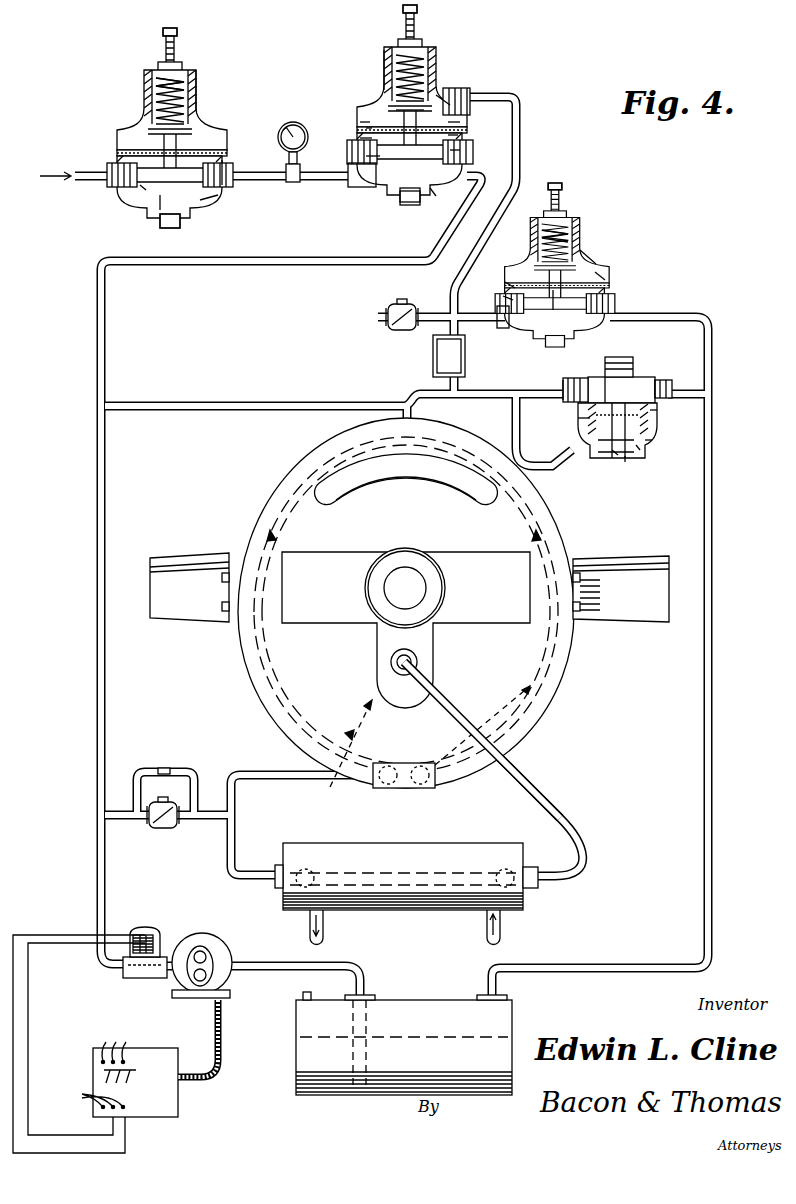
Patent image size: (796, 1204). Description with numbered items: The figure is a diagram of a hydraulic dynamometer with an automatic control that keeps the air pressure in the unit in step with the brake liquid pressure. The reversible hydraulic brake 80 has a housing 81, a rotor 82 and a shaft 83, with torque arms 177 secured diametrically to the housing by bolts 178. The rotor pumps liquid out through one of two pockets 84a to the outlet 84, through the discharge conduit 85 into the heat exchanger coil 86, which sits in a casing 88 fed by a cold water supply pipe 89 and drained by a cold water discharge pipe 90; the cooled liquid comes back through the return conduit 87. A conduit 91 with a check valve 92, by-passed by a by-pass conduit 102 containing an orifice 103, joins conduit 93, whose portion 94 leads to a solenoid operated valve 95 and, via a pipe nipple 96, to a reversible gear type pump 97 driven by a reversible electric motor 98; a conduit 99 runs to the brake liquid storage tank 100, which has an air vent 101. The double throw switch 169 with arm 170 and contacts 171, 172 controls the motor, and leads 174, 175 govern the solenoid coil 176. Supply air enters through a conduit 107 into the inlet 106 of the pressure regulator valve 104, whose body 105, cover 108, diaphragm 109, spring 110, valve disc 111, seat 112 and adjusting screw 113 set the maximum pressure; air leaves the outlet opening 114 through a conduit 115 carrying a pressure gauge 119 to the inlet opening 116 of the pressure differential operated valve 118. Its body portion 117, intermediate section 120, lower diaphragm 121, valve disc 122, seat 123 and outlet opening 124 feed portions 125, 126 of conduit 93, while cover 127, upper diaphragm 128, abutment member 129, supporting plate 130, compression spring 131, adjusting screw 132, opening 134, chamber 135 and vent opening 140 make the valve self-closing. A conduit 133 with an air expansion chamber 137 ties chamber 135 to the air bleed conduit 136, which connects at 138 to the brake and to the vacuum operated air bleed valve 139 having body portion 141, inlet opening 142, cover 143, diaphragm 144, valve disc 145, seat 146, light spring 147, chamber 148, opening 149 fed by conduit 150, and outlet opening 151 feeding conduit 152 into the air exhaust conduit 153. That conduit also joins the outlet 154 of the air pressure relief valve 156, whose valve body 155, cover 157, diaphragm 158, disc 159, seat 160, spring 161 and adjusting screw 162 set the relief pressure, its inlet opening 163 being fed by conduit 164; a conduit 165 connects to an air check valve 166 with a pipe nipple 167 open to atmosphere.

The reversible hydraulic brake 80 is at (419, 618).
The housing 81 is at (250, 698).
The rotor 82 is at (548, 664).
The shaft 83 is at (410, 566).
The outlet 84 is at (392, 790).
The pockets 84a is at (458, 770).
The discharge conduit 85 is at (258, 766).
The heat exchanger coil 86 is at (314, 870).
The return conduit 87 is at (570, 826).
The casing 88 is at (530, 900).
The cold water supply pipe 89 is at (500, 930).
The cold water discharge pipe 90 is at (325, 922).
The conduit 91 is at (188, 822).
The check valve 92 is at (163, 828).
The conduit 93 is at (105, 660).
The portion 94 is at (105, 888).
The solenoid operated valve 95 is at (160, 921).
The pipe nipple 96 is at (166, 978).
The reversible gear type pump 97 is at (208, 956).
The reversible electric motor 98 is at (214, 947).
The conduit 99 is at (340, 960).
The brake liquid storage tank 100 is at (426, 1016).
The air vent 101 is at (302, 996).
The by-pass conduit 102 is at (192, 770).
The orifice 103 is at (162, 768).
The pressure regulator valve 104 is at (213, 72).
The valve body 105 is at (204, 205).
The inlet 106 is at (140, 195).
The conduit 107 is at (85, 170).
The cover 108 is at (198, 94).
The diaphragm 109 is at (226, 150).
The spring 110 is at (160, 100).
The valve disc 111 is at (180, 222).
The seat 112 is at (152, 208).
The adjusting screw 113 is at (160, 38).
The outlet opening 114 is at (262, 182).
The conduit 115 is at (316, 182).
The inlet opening 116 is at (364, 190).
The body portion 117 is at (410, 204).
The pressure differential operated valve 118 is at (440, 61).
The pressure gauge 119 is at (296, 120).
The intermediate section 120 is at (362, 140).
The diaphragm 121 is at (454, 152).
The valve disc 122 is at (490, 170).
The seat 123 is at (368, 158).
The outlet opening 124 is at (432, 196).
The portion 125 is at (273, 263).
The portion 126 is at (105, 510).
The cover 127 is at (440, 88).
The diaphragm 128 is at (360, 120).
The abutment member 129 is at (366, 130).
The supporting plate 130 is at (450, 138).
The compression spring 131 is at (386, 72).
The adjusting screw 132 is at (402, 28).
The conduit 133 is at (520, 156).
The opening 134 is at (522, 97).
The chamber 135 is at (390, 105).
The air bleed conduit 136 is at (505, 390).
The air expansion chamber 137 is at (432, 360).
The connection point 138 is at (411, 468).
The vacuum operated air bleed valve 139 is at (638, 369).
The opening 140 is at (452, 126).
The body portion 141 is at (600, 378).
The inlet opening 142 is at (566, 378).
The cover 143 is at (640, 452).
The diaphragm 144 is at (650, 436).
The valve disc 145 is at (655, 420).
The seat 146 is at (578, 418).
The light spring 147 is at (612, 460).
The chamber 148 is at (626, 462).
The opening 149 is at (578, 465).
The conduit 150 is at (318, 402).
The outlet opening 151 is at (660, 378).
The conduit 152 is at (690, 390).
The air exhaust conduit 153 is at (713, 690).
The outlet 154 is at (610, 298).
The valve body 155 is at (510, 292).
The air pressure relief valve 156 is at (594, 231).
The cover 157 is at (590, 256).
The diaphragm 158 is at (596, 285).
The disc 159 is at (506, 300).
The seat 160 is at (556, 305).
The spring 161 is at (545, 250).
The adjusting screw 162 is at (562, 200).
The inlet opening 163 is at (500, 330).
The conduit 164 is at (490, 322).
The conduit 165 is at (428, 312).
The air check valve 166 is at (398, 302).
The pipe nipple 167 is at (375, 322).
The double throw switch 169 is at (135, 1070).
The switch arm 170 is at (104, 1076).
The contacts 171 is at (112, 1041).
The contacts 172 is at (88, 1098).
The lead 174 is at (44, 934).
The lead 175 is at (67, 955).
The solenoid coil 176 is at (152, 936).
The torque arms 177 is at (666, 620).
The bolts 178 is at (409, 592).